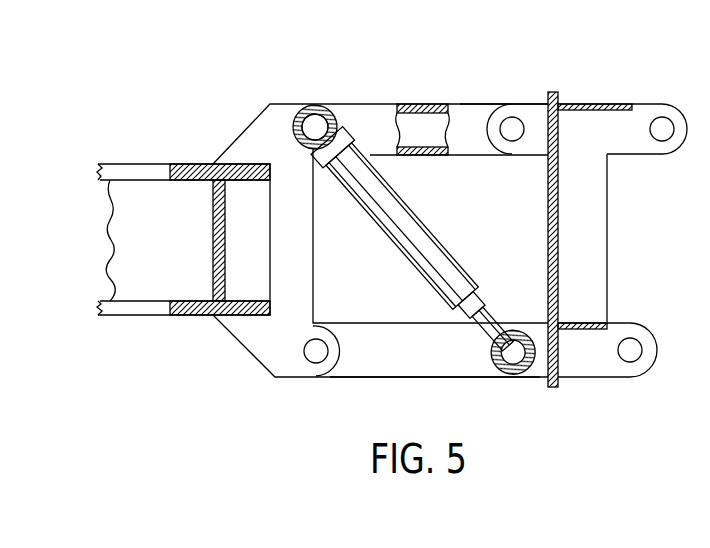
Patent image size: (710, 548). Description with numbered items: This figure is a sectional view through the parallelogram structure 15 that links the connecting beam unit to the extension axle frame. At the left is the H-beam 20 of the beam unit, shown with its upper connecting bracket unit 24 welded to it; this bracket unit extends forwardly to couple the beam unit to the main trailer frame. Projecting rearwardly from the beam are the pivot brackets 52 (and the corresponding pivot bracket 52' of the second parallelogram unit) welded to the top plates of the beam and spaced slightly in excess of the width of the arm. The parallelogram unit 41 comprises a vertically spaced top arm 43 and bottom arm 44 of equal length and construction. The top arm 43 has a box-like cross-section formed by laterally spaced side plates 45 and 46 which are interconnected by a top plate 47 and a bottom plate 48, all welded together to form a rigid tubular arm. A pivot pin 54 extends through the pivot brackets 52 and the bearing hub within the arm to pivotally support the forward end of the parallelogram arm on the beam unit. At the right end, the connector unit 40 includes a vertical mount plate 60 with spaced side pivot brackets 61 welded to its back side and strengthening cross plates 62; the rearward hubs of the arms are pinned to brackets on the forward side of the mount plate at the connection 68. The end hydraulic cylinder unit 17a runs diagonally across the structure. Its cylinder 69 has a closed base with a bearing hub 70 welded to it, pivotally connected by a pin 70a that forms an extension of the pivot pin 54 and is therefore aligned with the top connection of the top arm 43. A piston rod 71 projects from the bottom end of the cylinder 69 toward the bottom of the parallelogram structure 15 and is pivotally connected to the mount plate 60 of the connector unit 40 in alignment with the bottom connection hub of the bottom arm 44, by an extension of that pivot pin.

The parallelogram structure 15 is at (439, 100).
The end hydraulic cylinder unit 17a is at (469, 257).
The H-beam 20 is at (160, 318).
The upper connecting bracket unit 24 is at (188, 161).
The connector unit 40 is at (646, 101).
The parallelogram unit 41 is at (469, 101).
The top arm 43 is at (414, 104).
The bottom arm 44 is at (428, 373).
The side plate 45 is at (432, 140).
The side plate 46 is at (482, 138).
The top plate 47 is at (407, 106).
The bottom plate 48 is at (417, 157).
The pivot bracket 52 is at (380, 230).
The pivot bracket 52' is at (342, 328).
The pivot pin 54 is at (311, 352).
The vertical mount plate 60 is at (558, 223).
The side pivot bracket 61 is at (662, 102).
The strengthening cross plate 62 is at (613, 115).
The pin connection 68 is at (516, 379).
The cylinder 69 is at (385, 229).
The bearing hub 70 is at (301, 167).
The pin 70a is at (297, 92).
The piston rod 71 is at (504, 296).